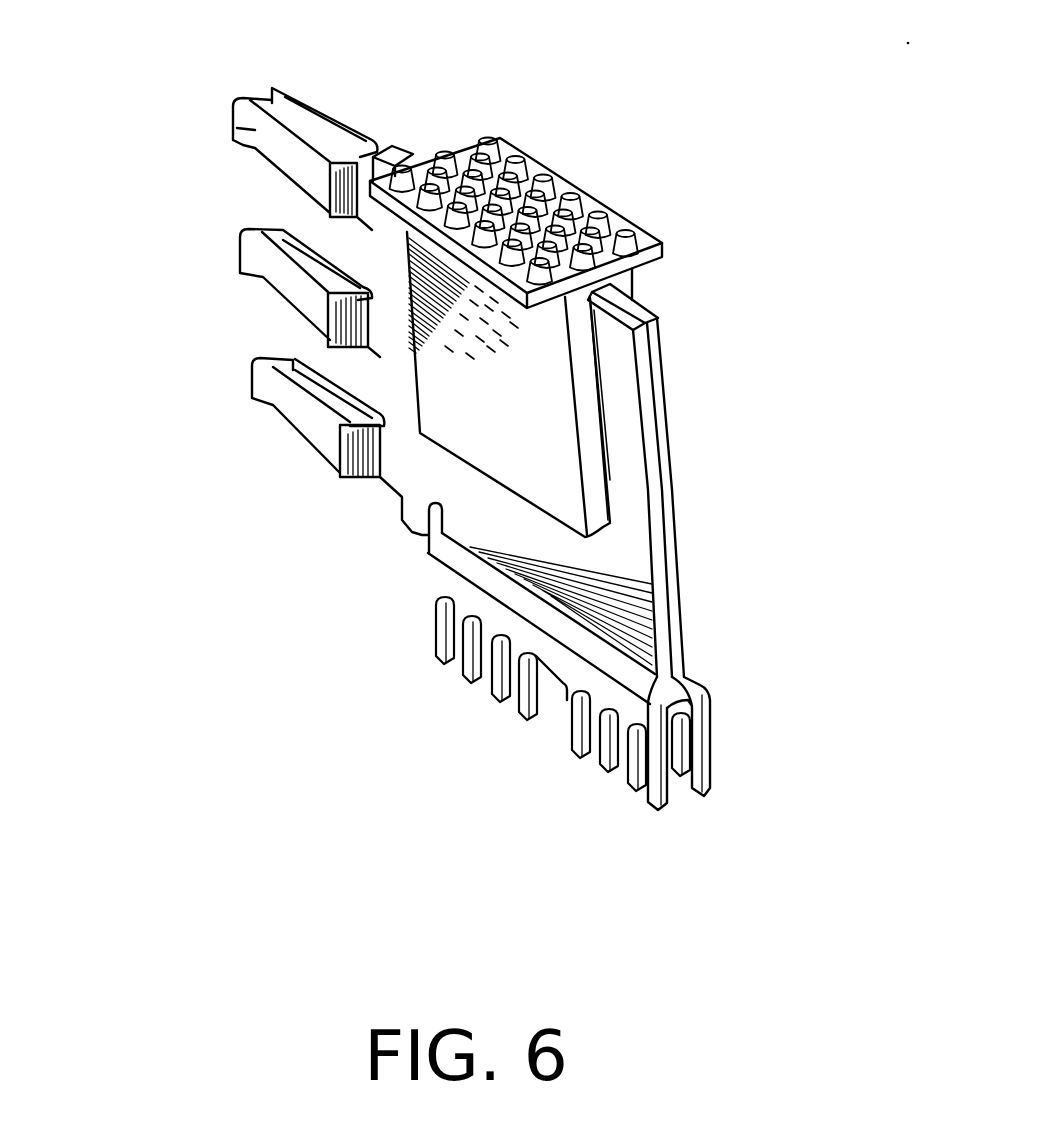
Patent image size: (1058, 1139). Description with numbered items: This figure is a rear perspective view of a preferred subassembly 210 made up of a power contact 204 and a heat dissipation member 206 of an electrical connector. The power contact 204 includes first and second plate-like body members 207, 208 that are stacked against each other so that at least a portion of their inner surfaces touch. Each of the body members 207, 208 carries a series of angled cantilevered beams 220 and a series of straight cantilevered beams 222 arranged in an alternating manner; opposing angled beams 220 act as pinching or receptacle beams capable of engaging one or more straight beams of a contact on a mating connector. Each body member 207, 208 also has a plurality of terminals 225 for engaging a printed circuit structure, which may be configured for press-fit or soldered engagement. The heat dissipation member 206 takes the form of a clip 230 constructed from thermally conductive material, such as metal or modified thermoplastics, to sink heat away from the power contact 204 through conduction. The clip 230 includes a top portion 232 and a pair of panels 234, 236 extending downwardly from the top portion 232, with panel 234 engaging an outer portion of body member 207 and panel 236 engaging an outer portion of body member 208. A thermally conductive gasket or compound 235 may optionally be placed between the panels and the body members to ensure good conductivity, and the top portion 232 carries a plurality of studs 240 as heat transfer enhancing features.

The power contact 204 is at (722, 630).
The heat dissipation member 206 is at (614, 182).
The first plate-like body member 207 is at (442, 533).
The second plate-like body member 208 is at (655, 350).
The subassembly 210 is at (245, 745).
The angled cantilevered beams 220 is at (240, 125).
The straight cantilevered beams 222 is at (285, 327).
The terminals 225 is at (525, 703).
The clip 230 is at (597, 161).
The top portion 232 is at (660, 248).
The panel 234 is at (527, 390).
The thermally conductive gasket or compound 235 is at (612, 425).
The panel 236 is at (640, 293).
The studs 240 is at (496, 138).